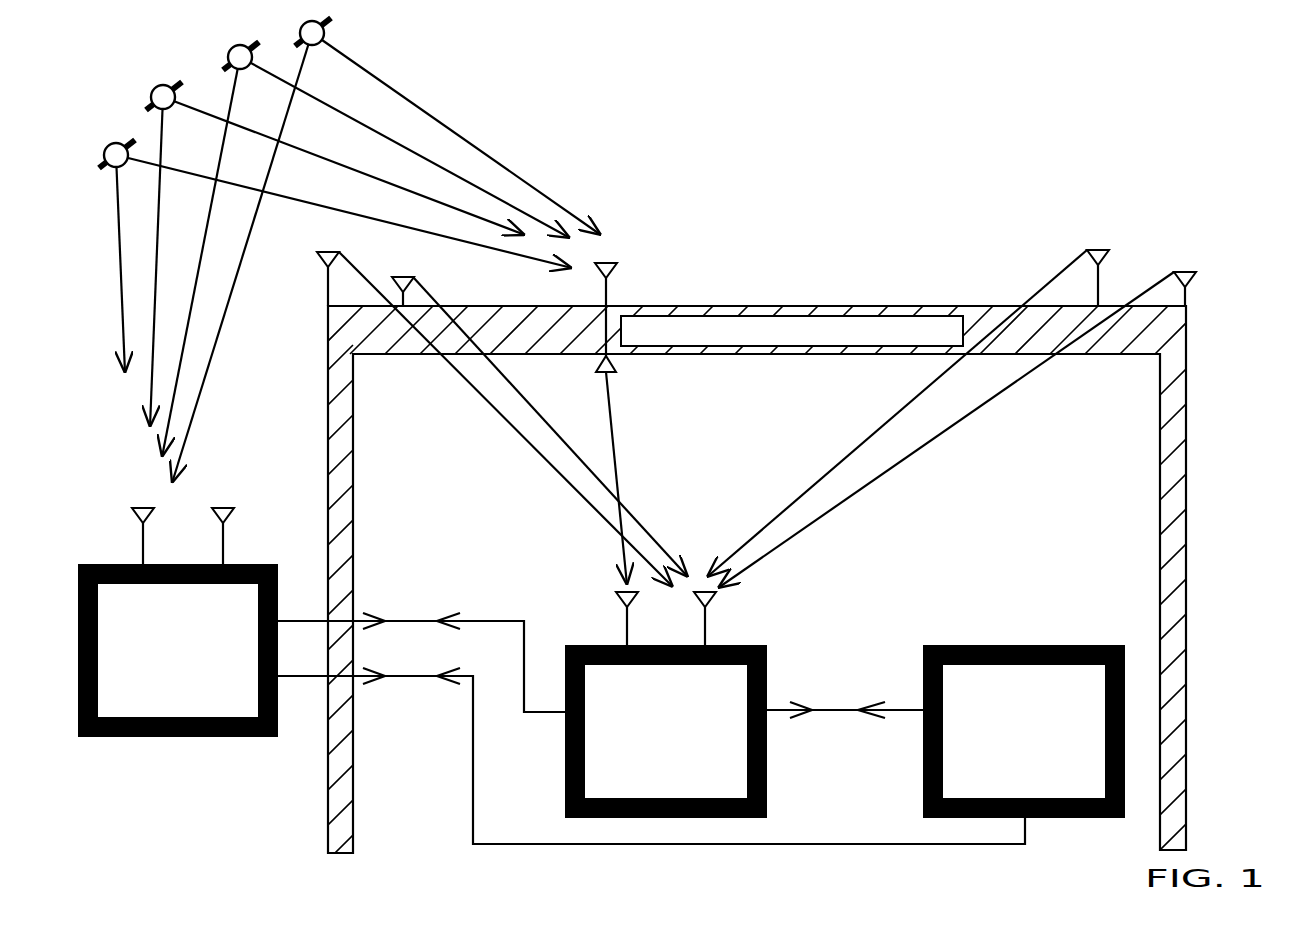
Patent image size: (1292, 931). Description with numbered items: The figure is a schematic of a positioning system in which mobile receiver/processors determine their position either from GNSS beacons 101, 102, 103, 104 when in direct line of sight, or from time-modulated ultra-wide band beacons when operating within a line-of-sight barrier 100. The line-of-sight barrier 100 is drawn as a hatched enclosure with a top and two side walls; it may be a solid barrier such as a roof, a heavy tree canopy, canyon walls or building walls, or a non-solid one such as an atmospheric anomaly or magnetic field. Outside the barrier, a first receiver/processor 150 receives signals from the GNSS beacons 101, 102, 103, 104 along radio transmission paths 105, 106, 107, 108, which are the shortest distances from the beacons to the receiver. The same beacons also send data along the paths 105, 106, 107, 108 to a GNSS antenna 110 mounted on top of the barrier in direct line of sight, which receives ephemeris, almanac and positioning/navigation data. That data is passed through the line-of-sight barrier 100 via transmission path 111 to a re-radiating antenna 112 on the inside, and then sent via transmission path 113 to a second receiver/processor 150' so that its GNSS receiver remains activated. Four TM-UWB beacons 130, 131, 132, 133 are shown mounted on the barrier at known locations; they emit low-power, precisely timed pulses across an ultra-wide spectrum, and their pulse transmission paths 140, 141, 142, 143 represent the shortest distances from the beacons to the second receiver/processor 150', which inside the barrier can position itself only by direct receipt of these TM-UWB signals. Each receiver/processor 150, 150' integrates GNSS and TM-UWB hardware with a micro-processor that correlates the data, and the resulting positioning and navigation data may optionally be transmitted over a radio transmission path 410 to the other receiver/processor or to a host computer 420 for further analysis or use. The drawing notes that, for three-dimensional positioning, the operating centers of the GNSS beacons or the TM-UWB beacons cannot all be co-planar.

The line-of-sight barrier 100 is at (787, 306).
The GNSS beacon 101 is at (104, 155).
The GNSS beacon 102 is at (151, 97).
The GNSS beacon 103 is at (228, 57).
The GNSS beacon 104 is at (324, 33).
The radio transmission path 105 is at (122, 363).
The radio transmission path 106 is at (148, 409).
The radio transmission path 107 is at (160, 440).
The radio transmission path 108 is at (170, 470).
The GNSS antenna 110 is at (612, 270).
The transmission path 111 is at (603, 293).
The re-radiating antenna 112 is at (616, 369).
The transmission path 113 is at (618, 456).
The TM-UWB beacon 130 is at (317, 252).
The TM-UWB beacon 131 is at (409, 283).
The TM-UWB beacon 132 is at (1109, 250).
The TM-UWB beacon 133 is at (1196, 272).
The pulse transmission path 140 is at (506, 420).
The pulse transmission path 141 is at (531, 410).
The pulse transmission path 142 is at (890, 418).
The pulse transmission path 143 is at (900, 463).
The first receiver/processor 150 is at (143, 624).
The second receiver/processor 150' is at (625, 703).
The radio transmission path 410 is at (524, 647).
The host computer 420 is at (923, 796).